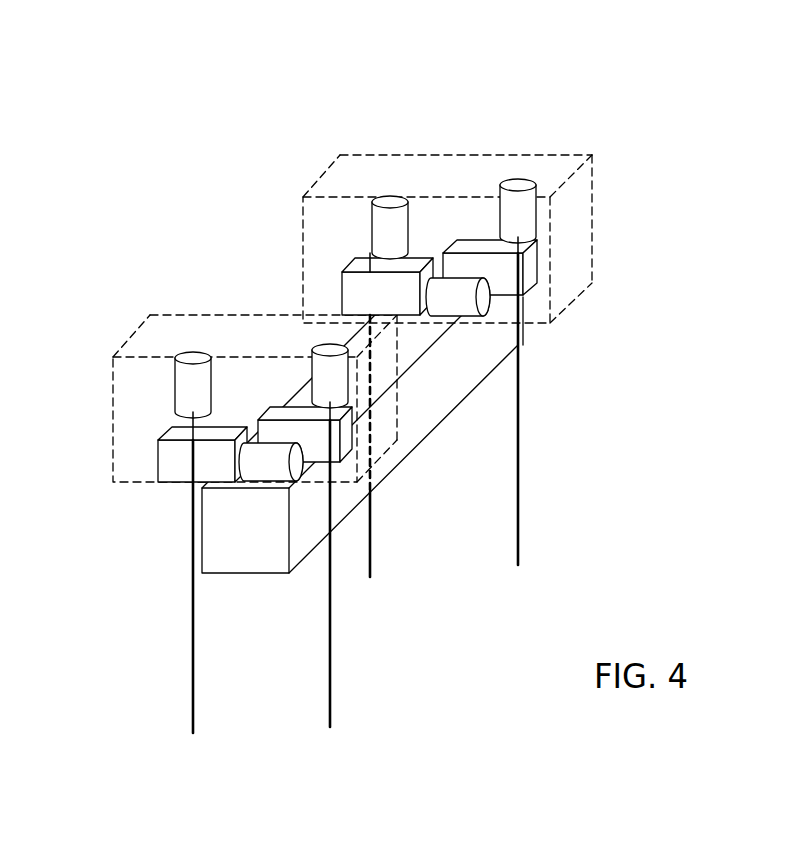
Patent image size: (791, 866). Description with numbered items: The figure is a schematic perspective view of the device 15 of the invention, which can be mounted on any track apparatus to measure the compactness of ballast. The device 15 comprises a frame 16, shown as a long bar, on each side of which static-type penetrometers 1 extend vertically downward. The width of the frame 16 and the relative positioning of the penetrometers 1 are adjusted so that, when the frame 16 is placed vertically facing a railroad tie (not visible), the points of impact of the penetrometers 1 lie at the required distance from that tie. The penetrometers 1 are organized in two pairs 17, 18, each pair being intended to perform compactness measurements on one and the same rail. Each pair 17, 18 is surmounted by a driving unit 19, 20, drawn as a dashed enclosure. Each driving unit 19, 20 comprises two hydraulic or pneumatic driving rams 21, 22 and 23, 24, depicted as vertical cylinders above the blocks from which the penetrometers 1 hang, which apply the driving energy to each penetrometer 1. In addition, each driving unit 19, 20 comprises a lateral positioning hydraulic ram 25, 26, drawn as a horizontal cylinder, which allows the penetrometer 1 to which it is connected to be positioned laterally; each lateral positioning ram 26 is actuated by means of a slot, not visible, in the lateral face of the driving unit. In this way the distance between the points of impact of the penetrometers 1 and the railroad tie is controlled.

The penetrometer 1 is at (188, 662).
The device 15 is at (622, 104).
The frame 16 is at (423, 405).
The pair of penetrometers 17 is at (260, 728).
The pair of penetrometers 18 is at (560, 468).
The driving unit 19 is at (112, 418).
The driving unit 20 is at (593, 218).
The driving ram 21 is at (188, 380).
The driving ram 22 is at (327, 350).
The driving ram 23 is at (383, 222).
The driving ram 24 is at (518, 184).
The lateral positioning hydraulic ram 25 is at (487, 298).
The lateral positioning hydraulic ram 26 is at (257, 465).